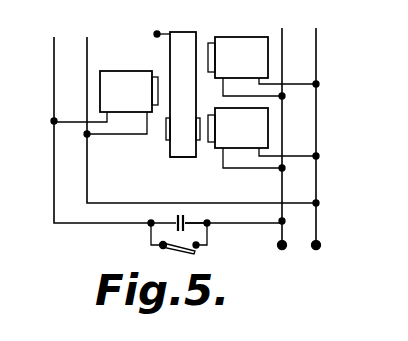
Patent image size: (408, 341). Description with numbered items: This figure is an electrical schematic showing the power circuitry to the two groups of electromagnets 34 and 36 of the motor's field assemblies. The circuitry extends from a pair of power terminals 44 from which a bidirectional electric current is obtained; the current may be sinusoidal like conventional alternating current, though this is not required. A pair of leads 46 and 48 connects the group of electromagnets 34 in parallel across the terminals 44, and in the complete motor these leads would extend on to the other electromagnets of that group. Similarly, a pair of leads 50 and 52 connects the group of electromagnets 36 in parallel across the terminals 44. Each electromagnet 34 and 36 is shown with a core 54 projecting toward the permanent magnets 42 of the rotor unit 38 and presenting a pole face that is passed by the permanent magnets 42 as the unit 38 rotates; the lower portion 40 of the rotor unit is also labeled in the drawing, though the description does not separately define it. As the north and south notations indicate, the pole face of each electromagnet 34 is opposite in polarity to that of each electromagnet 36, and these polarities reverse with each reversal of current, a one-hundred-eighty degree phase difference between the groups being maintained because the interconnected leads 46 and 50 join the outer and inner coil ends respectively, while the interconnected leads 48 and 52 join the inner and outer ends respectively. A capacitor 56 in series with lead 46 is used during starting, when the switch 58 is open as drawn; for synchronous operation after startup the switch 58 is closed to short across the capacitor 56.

The electromagnets 34 is at (100, 90).
The electromagnets 36 is at (262, 61).
The rotor unit 38 is at (157, 34).
The bar lower end 40 is at (183, 157).
The permanent magnets 42 is at (166, 130).
The power terminals 44 is at (282, 249).
The lead 46 is at (54, 155).
The lead 48 is at (87, 182).
The lead 50 is at (284, 179).
The lead 52 is at (317, 190).
The core 54 is at (160, 72).
The capacitor 56 is at (185, 214).
The switch 58 is at (166, 254).